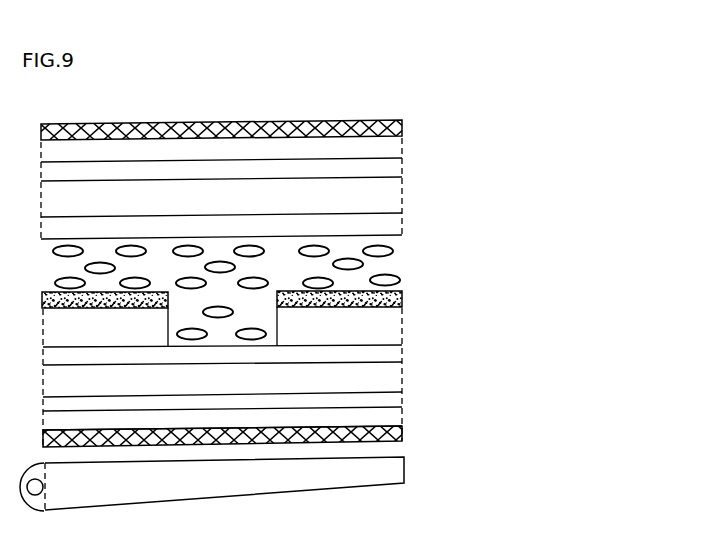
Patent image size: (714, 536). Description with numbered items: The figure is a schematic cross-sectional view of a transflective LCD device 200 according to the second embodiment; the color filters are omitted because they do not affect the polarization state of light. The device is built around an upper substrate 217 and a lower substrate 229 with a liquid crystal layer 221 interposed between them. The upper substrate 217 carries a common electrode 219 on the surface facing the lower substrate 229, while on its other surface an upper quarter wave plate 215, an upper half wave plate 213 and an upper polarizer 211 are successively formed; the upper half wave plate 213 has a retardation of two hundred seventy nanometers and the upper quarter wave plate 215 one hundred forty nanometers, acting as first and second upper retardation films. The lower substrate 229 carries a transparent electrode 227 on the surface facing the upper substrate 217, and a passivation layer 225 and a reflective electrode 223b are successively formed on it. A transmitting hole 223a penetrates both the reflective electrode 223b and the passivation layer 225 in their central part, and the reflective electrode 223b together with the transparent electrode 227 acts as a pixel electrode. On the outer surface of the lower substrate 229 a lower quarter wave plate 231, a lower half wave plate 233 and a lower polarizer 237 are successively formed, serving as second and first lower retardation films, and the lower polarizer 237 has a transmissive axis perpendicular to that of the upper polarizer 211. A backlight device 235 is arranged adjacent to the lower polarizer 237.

The transflective LCD device 200 is at (343, 96).
The upper polarizer 211 is at (401, 121).
The upper half wave plate 213 is at (406, 143).
The upper quarter wave plate 215 is at (406, 165).
The upper substrate 217 is at (408, 191).
The common electrode 219 is at (408, 224).
The liquid crystal layer 221 is at (404, 260).
The transmitting hole 223a is at (246, 312).
The reflective electrode 223b is at (405, 300).
The passivation layer 225 is at (403, 322).
The transparent electrode 227 is at (403, 350).
The lower substrate 229 is at (403, 374).
The lower quarter wave plate 231 is at (403, 398).
The lower half wave plate 233 is at (403, 422).
The lower polarizer 237 is at (405, 444).
The backlight device 235 is at (403, 472).